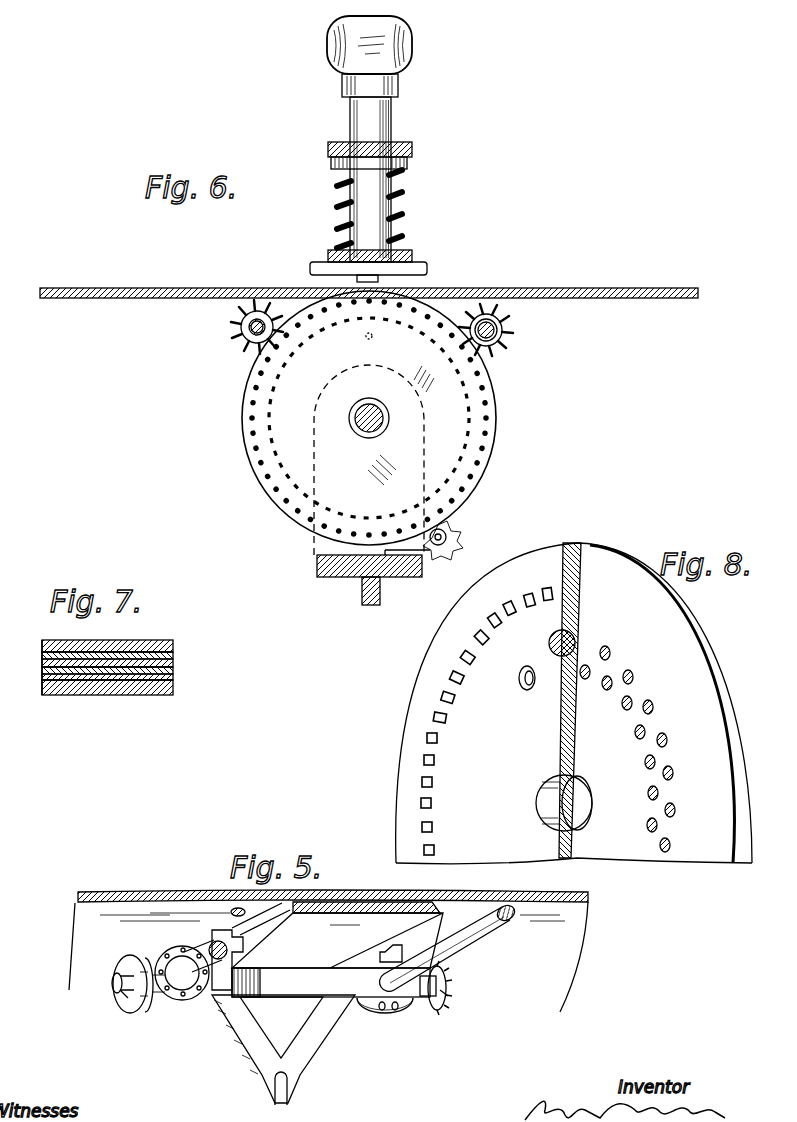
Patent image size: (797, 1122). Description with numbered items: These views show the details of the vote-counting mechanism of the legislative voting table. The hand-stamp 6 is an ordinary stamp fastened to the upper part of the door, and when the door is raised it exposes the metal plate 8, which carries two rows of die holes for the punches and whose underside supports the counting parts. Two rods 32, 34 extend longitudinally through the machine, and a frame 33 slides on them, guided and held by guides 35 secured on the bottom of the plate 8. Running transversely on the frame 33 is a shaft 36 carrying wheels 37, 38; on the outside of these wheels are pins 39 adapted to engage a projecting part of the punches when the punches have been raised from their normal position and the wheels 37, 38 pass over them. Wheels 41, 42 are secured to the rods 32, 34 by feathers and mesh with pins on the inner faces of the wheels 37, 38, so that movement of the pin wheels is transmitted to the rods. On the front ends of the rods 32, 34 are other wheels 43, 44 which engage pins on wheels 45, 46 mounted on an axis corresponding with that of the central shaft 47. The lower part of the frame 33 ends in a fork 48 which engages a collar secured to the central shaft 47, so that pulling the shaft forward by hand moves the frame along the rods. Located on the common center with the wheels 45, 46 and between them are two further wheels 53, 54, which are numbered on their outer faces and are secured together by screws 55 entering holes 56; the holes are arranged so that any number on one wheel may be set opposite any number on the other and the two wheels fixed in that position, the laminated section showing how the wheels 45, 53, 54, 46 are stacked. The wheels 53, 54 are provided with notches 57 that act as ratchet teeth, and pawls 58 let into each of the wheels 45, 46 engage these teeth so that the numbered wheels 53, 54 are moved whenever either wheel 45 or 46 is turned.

In FIG. 6, the hand-stamp 6 is at (391, 125).
In FIG. 6, the metal plate 8 is at (545, 289).
In FIG. 6, the rod 32 is at (245, 334).
In FIG. 5, the rod 32 is at (212, 947).
In FIG. 5, the frame 33 is at (304, 1026).
In FIG. 6, the rod 34 is at (497, 331).
In FIG. 5, the rod 34 is at (496, 931).
In FIG. 5, the guide 35 is at (337, 955).
In FIG. 5, the shaft 36 is at (113, 985).
In FIG. 5, the wheel 37 is at (132, 960).
In FIG. 5, the wheel 38 is at (450, 986).
In FIG. 5, the pin 39 is at (125, 998).
In FIG. 5, the wheel 41 is at (183, 1000).
In FIG. 5, the wheel 42 is at (387, 1017).
In FIG. 6, the wheel 43 is at (240, 324).
In FIG. 6, the wheel 44 is at (498, 344).
In FIG. 7, the wheel 45 is at (167, 642).
In FIG. 6, the wheel 46 is at (483, 461).
In FIG. 7, the wheel 46 is at (175, 694).
In FIG. 6, the central shaft 47 is at (349, 414).
In FIG. 5, the fork 48 is at (299, 1088).
In FIG. 8, the wheel 53 is at (558, 553).
In FIG. 7, the wheel 53 is at (173, 660).
In FIG. 8, the wheel 54 is at (712, 638).
In FIG. 7, the wheel 54 is at (177, 677).
In FIG. 8, the screw 55 is at (552, 643).
In FIG. 8, the hole 56 is at (648, 705).
In FIG. 8, the notch 57 is at (436, 742).
In FIG. 7, the notch 57 is at (63, 652).
In FIG. 7, the pawl 58 is at (133, 650).